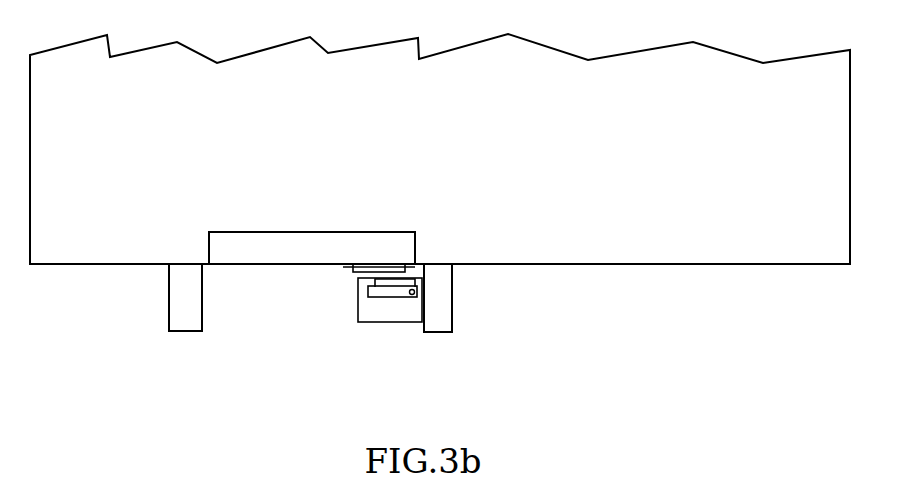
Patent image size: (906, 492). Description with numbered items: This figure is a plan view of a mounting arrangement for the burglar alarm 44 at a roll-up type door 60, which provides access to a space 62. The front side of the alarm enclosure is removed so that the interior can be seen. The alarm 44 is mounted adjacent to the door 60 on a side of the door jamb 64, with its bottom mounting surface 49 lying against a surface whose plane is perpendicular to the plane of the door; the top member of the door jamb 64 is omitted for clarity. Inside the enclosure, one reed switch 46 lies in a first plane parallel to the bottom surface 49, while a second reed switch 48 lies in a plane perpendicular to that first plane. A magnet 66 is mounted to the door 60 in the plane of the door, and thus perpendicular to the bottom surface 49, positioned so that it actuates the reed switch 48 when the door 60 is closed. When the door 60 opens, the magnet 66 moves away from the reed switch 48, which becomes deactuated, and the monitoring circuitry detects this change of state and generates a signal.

The burglar alarm 44 is at (353, 337).
The reed switch 46 is at (412, 296).
The reed switch 48 is at (390, 288).
The bottom surface 49 is at (428, 310).
The roll-up type door 60 is at (286, 244).
The space 62 is at (640, 143).
The door jamb 64 is at (188, 301).
The magnet 66 is at (379, 266).